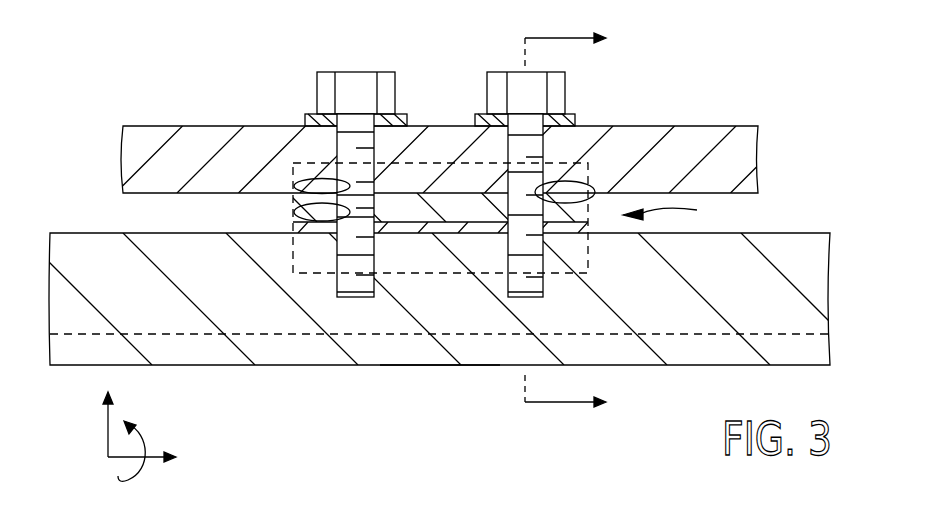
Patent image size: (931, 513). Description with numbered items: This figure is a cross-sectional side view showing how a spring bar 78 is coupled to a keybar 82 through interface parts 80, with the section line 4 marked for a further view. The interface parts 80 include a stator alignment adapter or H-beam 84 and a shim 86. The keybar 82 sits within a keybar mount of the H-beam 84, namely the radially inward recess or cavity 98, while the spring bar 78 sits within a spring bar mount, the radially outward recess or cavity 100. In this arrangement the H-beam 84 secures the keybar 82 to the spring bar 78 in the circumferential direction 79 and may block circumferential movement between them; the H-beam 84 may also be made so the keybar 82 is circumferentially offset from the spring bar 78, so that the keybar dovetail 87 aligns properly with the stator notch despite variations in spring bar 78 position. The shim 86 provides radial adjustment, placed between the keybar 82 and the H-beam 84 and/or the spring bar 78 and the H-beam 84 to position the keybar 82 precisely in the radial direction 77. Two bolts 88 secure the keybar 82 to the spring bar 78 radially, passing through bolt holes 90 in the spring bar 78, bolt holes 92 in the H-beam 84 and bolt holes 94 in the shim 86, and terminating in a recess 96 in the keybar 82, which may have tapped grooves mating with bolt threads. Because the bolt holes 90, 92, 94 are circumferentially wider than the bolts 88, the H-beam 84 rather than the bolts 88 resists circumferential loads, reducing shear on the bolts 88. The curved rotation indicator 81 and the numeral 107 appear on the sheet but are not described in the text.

The section line 4- 4 is at (567, 222).
The radial direction 77 is at (107, 457).
The spring bar 78 is at (137, 126).
The circumferential direction 79 is at (140, 483).
The interface parts 80 is at (676, 213).
The rotation about vertical axis 81 is at (153, 450).
The keybar 82 is at (137, 233).
The H-beam 84 is at (294, 210).
The shim 86 is at (294, 228).
The keybar dovetail 87 is at (436, 366).
The bolt 88 is at (356, 72).
The bolt hole in spring bar 90 is at (362, 146).
The bolt hole in H-beam 92 is at (294, 184).
The bolt hole in shim 94 is at (294, 212).
The recess 96 is at (353, 297).
The radially inward cavity 98 is at (328, 272).
The radially outward cavity 100 is at (438, 172).
The reference element 107 is at (462, 506).